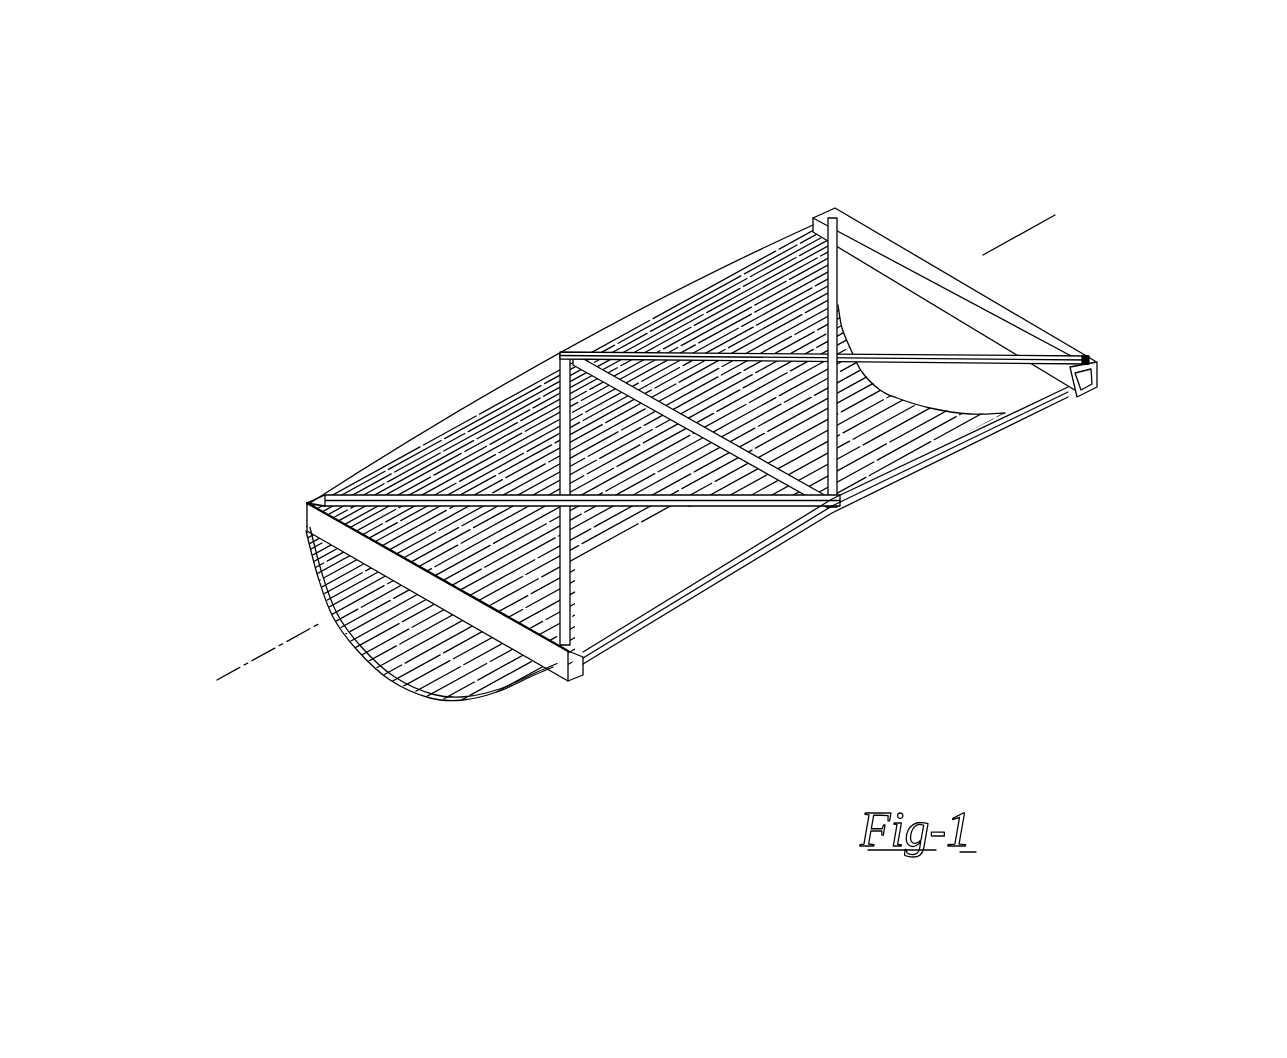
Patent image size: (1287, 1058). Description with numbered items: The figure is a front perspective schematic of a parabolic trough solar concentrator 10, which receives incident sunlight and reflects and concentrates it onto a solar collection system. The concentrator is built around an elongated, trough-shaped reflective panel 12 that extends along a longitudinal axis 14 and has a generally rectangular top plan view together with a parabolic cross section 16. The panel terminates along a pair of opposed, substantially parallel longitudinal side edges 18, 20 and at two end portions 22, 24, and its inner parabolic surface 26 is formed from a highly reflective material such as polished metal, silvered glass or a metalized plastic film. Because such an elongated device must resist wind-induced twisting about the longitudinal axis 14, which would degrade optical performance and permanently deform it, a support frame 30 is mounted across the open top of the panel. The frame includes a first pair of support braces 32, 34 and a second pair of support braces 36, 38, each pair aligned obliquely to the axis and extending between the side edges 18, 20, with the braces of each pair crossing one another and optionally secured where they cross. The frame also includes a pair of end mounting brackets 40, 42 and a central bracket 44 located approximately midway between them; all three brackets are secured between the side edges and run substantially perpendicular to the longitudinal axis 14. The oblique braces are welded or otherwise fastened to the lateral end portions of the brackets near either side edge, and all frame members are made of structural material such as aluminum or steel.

The solar concentrator 10 is at (626, 312).
The reflective panel 12 is at (492, 672).
The longitudinal axis 14 is at (1013, 235).
The parabolic cross section 16 is at (316, 578).
The longitudinal side edge 18 is at (460, 432).
The longitudinal side edge 20 is at (637, 627).
The end portion 22 is at (383, 691).
The end portion 24 is at (1090, 339).
The inner parabolic surface 26 is at (382, 617).
The support frame 30 is at (348, 512).
The support brace 32 is at (531, 490).
The support brace 34 is at (574, 578).
The support brace 36 is at (742, 350).
The support brace 38 is at (840, 279).
The end mounting bracket 40 is at (551, 653).
The end mounting bracket 42 is at (1033, 331).
The central bracket 44 is at (797, 488).